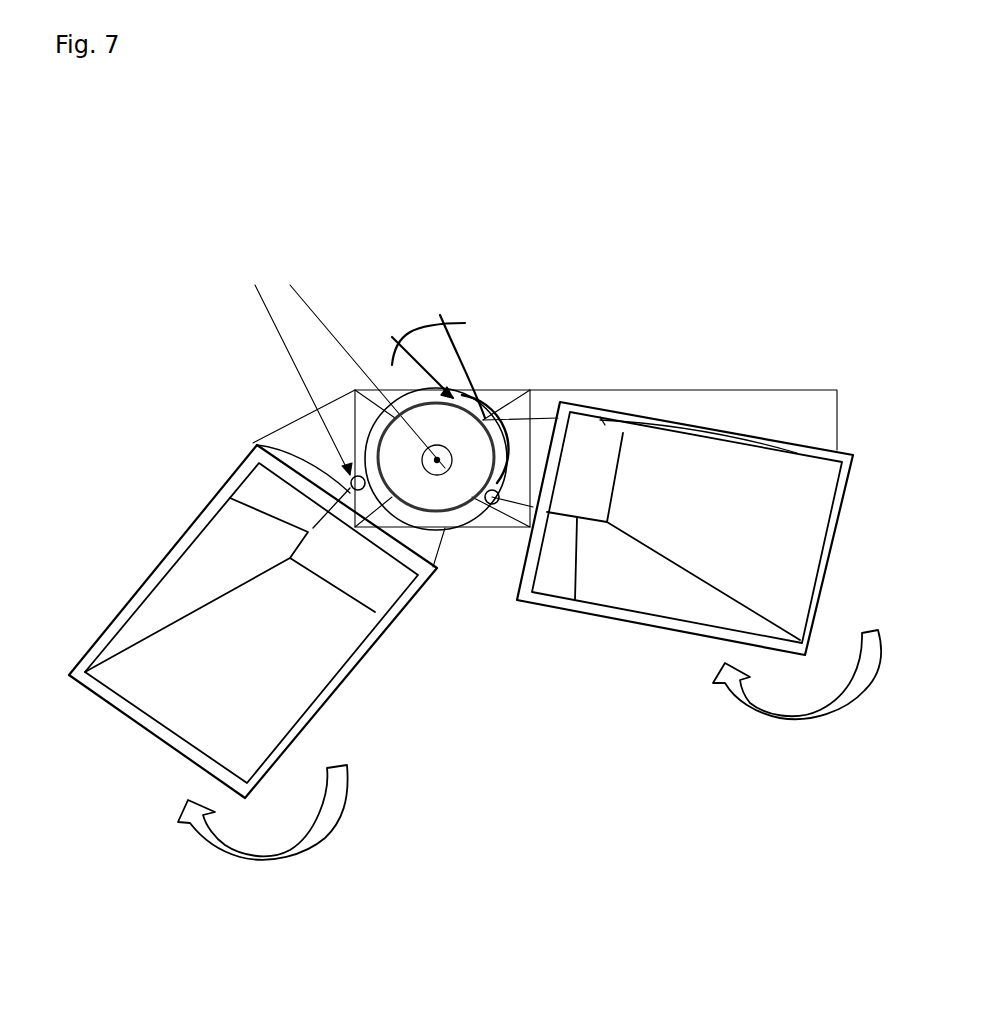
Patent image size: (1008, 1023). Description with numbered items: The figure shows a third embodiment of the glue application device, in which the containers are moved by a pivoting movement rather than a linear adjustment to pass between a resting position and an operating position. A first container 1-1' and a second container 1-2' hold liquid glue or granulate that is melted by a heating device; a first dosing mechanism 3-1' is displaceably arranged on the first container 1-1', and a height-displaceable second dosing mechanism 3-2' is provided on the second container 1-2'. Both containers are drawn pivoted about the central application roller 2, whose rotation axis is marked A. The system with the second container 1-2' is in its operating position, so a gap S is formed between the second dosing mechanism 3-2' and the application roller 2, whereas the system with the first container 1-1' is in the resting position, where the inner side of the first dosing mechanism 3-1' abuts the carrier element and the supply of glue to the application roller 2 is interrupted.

The first container 1-1' is at (237, 621).
The second container 1-2' is at (689, 503).
The application roller 2 is at (450, 490).
The first dosing mechanism 3-1' is at (292, 441).
The second dosing mechanism 3-2' is at (518, 399).
The rotation axis A is at (432, 467).
The gap S is at (438, 351).